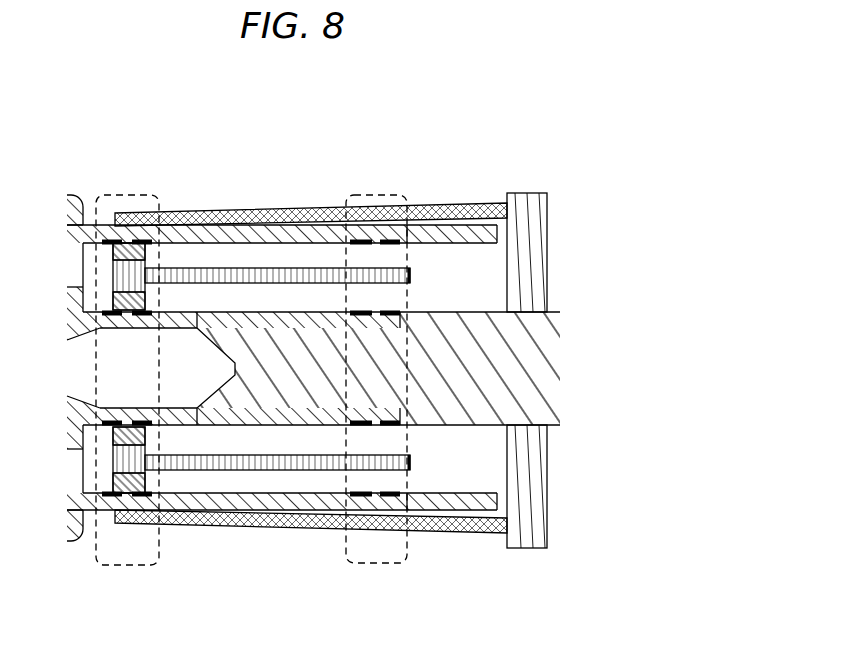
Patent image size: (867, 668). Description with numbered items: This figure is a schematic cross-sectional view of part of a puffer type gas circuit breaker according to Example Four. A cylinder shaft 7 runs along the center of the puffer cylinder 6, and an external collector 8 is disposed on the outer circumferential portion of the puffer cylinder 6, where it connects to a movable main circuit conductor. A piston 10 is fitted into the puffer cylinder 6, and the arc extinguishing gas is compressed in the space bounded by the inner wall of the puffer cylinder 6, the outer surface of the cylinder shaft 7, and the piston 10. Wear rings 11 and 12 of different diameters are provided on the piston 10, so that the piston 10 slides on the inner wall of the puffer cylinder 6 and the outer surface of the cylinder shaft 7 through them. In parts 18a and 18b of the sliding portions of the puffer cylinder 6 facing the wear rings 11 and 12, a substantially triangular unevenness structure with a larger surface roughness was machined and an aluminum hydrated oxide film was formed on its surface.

The puffer cylinder 6 is at (311, 318).
The cylinder shaft 7 is at (321, 474).
The external collector 8 is at (512, 326).
The piston 10 is at (277, 287).
The wear ring 11 is at (251, 289).
The wear ring 12 is at (170, 454).
The part of the sliding portions 18a is at (123, 334).
The part of the sliding portions 18b is at (383, 333).